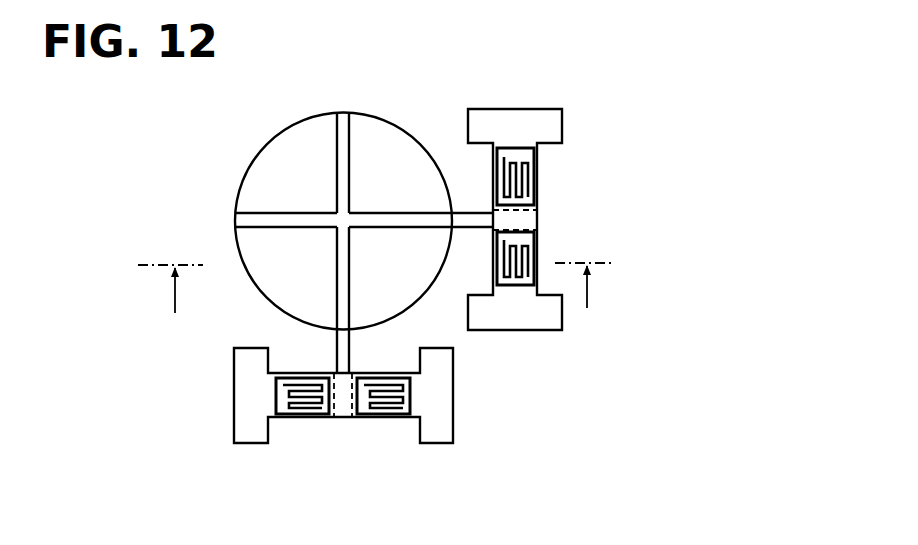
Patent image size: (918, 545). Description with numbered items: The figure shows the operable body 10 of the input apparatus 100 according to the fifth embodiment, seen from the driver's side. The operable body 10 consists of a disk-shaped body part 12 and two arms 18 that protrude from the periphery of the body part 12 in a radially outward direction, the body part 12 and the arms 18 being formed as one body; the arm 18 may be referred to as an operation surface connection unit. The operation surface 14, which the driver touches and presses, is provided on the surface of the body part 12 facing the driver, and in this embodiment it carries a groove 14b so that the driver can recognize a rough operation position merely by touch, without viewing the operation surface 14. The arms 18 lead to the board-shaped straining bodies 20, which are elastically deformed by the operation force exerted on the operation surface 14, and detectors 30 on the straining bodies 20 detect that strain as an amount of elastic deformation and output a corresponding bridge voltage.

The input apparatus 100 is at (654, 93).
The operable body 10 is at (296, 96).
The body part 12 is at (319, 113).
The operation surface 14 is at (285, 153).
The groove 14b is at (345, 140).
The arm 18 is at (468, 211).
The straining body 20 is at (562, 122).
The detector 30 is at (534, 178).